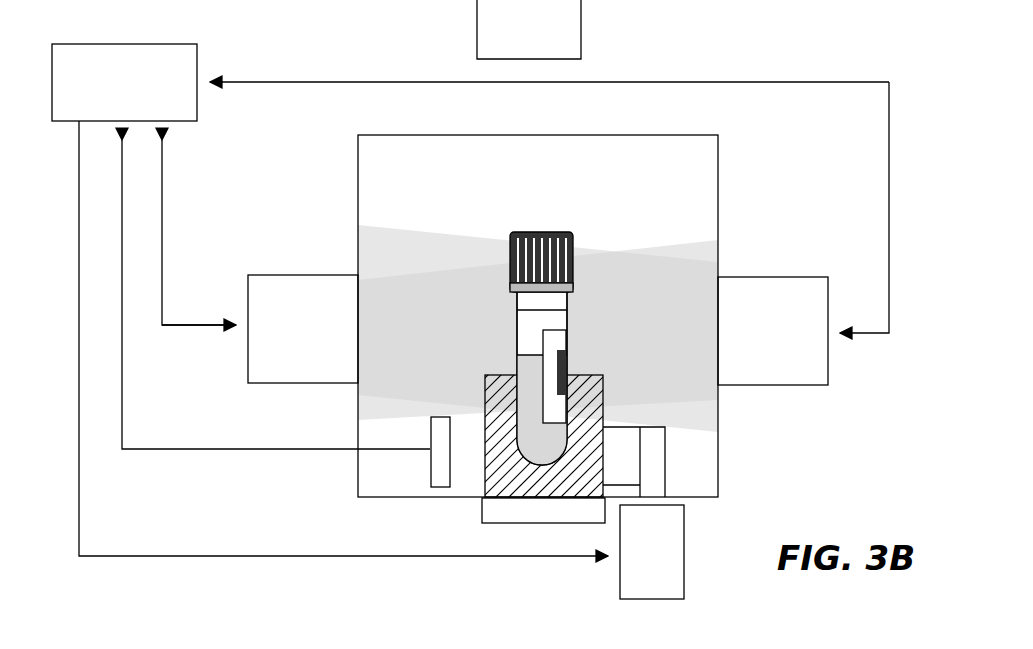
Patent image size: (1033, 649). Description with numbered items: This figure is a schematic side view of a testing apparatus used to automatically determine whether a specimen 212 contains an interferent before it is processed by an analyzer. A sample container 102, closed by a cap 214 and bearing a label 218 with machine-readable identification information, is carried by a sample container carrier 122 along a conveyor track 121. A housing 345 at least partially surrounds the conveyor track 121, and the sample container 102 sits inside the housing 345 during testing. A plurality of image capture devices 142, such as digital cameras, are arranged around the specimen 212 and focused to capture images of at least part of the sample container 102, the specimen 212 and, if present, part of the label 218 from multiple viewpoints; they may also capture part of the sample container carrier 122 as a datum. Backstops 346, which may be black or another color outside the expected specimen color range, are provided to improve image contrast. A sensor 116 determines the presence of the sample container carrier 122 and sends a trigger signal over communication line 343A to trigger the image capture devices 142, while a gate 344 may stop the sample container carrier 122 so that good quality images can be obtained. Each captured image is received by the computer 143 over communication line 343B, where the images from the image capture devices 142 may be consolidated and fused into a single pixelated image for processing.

The computer 143 is at (118, 44).
The image capture device 142 is at (768, 277).
The housing 345 is at (718, 168).
The backstop 346 is at (358, 256).
The sample container 102 is at (528, 315).
The cap 214 is at (560, 232).
The label 218 is at (562, 330).
The specimen 212 is at (508, 316).
The sample container carrier 122 is at (592, 376).
The gate 344 is at (627, 438).
The sensor 116 is at (431, 467).
The conveyor track 121 is at (482, 510).
The communication line 343A is at (155, 449).
The communication line 343B is at (180, 325).